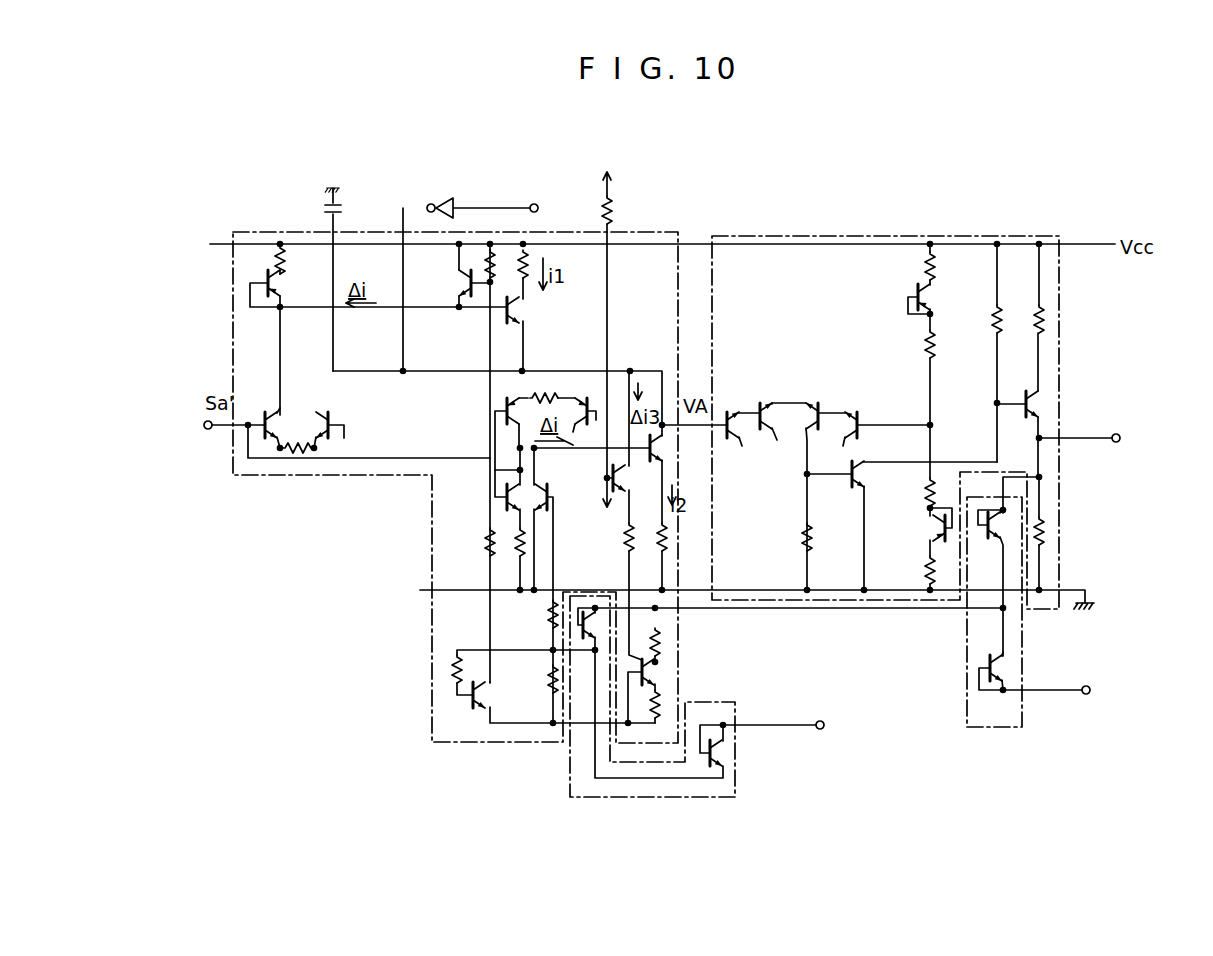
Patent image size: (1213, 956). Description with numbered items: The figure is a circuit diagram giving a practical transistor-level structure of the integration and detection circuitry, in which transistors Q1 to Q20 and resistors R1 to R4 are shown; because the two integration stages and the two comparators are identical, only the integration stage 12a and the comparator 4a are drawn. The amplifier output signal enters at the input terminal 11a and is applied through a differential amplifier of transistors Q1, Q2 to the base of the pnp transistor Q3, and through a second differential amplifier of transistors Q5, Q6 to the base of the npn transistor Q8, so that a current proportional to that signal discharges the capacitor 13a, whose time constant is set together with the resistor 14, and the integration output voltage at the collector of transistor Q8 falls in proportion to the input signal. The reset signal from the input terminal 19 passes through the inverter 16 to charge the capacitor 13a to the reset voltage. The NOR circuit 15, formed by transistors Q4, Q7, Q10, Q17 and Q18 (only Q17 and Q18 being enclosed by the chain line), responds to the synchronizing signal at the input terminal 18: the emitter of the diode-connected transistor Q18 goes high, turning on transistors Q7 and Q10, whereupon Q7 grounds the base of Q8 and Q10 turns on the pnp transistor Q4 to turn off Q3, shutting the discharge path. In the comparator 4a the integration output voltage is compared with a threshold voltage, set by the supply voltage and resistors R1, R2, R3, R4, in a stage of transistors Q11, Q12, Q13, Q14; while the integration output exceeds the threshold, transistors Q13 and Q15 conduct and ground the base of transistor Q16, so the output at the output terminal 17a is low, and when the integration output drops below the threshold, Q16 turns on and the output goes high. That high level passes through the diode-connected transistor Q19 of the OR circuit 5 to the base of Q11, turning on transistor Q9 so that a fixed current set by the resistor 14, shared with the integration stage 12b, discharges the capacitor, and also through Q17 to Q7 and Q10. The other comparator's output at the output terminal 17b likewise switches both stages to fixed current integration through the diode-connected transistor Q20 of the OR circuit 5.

The integration stage 12a is at (256, 230).
The integration stage 12b is at (601, 507).
The capacitor 13a is at (343, 211).
The inverter 16 is at (431, 203).
The input terminal 19 is at (539, 205).
The resistor 14 is at (612, 210).
The comparator 4a is at (930, 232).
The input terminal 11a is at (207, 431).
The NOR circuit 15 is at (722, 800).
The input terminal 18 is at (788, 738).
The output terminal 17a is at (1121, 438).
The output terminal 17b is at (1091, 690).
The OR circuit 5 is at (1003, 730).
The transistor Q1 is at (278, 415).
The transistor Q2 is at (330, 415).
The transistor Q3 is at (520, 318).
The transistor Q4 is at (467, 286).
The transistor Q5 is at (505, 400).
The transistor Q6 is at (584, 398).
The transistor Q7 is at (545, 486).
The transistor Q8 is at (664, 450).
The transistor Q9 is at (620, 490).
The transistor Q10 is at (485, 694).
The transistor Q11 is at (648, 660).
The transistor Q12 is at (768, 402).
The transistor Q13 is at (822, 402).
The transistor Q14 is at (862, 412).
The transistor Q15 is at (860, 464).
The transistor Q16 is at (1026, 392).
The transistor Q17 is at (585, 611).
The transistor Q18 is at (724, 762).
The transistor Q19 is at (996, 540).
The transistor Q20 is at (985, 660).
The resistor R1 is at (936, 268).
The resistor R2 is at (936, 350).
The resistor R3 is at (924, 492).
The resistor R4 is at (921, 565).